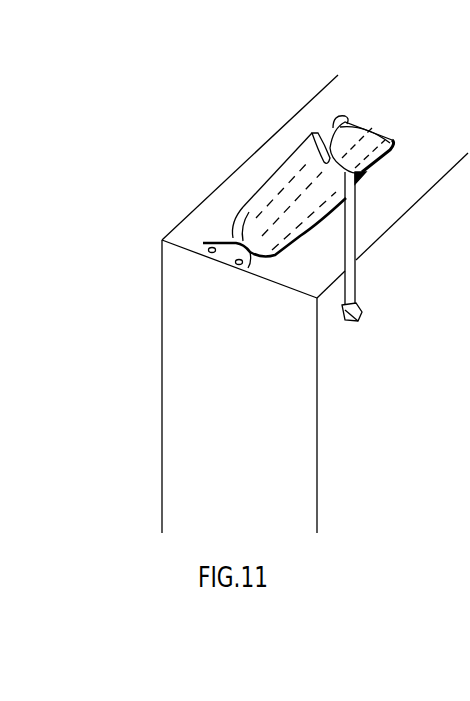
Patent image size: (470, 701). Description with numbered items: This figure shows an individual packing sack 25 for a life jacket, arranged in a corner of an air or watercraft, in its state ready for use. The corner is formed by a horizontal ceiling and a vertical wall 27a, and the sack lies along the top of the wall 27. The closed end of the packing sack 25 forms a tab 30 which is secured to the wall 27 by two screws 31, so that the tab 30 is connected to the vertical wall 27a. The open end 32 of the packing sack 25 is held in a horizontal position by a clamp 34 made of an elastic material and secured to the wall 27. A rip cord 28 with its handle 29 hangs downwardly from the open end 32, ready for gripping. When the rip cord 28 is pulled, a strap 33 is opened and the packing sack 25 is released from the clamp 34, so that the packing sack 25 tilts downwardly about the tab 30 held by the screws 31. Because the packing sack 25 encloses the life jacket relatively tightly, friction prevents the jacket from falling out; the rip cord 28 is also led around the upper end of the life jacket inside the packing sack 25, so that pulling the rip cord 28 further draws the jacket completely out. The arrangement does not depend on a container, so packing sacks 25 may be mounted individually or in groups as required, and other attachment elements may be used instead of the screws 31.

The packing sack 25 is at (313, 225).
The wall 27 is at (446, 132).
The vertical wall 27a is at (259, 428).
The rip cord 28 is at (356, 273).
The handle 29 is at (362, 319).
The tab 30 is at (240, 265).
The screws 31 is at (213, 253).
The open end 32 is at (340, 122).
The strap 33 is at (380, 174).
The clamp 34 is at (312, 133).